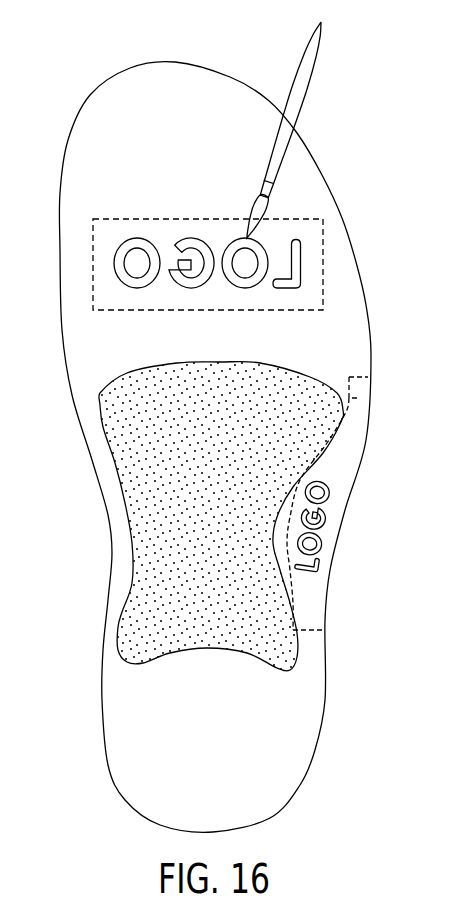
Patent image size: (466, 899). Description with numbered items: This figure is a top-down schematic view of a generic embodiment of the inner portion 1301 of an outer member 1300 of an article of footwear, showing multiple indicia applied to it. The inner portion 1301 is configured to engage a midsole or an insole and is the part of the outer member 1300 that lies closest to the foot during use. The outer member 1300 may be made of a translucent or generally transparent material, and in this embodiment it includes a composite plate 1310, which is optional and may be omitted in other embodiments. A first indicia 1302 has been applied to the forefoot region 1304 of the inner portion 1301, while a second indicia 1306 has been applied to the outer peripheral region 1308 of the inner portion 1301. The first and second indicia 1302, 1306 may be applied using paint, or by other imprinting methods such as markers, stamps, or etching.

The outer member 1300 is at (108, 502).
The inner portion 1301 is at (220, 767).
The first indicia 1302 is at (331, 263).
The forefoot region 1304 is at (168, 218).
The second indicia 1306 is at (338, 535).
The outer peripheral region 1308 is at (352, 398).
The composite plate 1310 is at (130, 632).